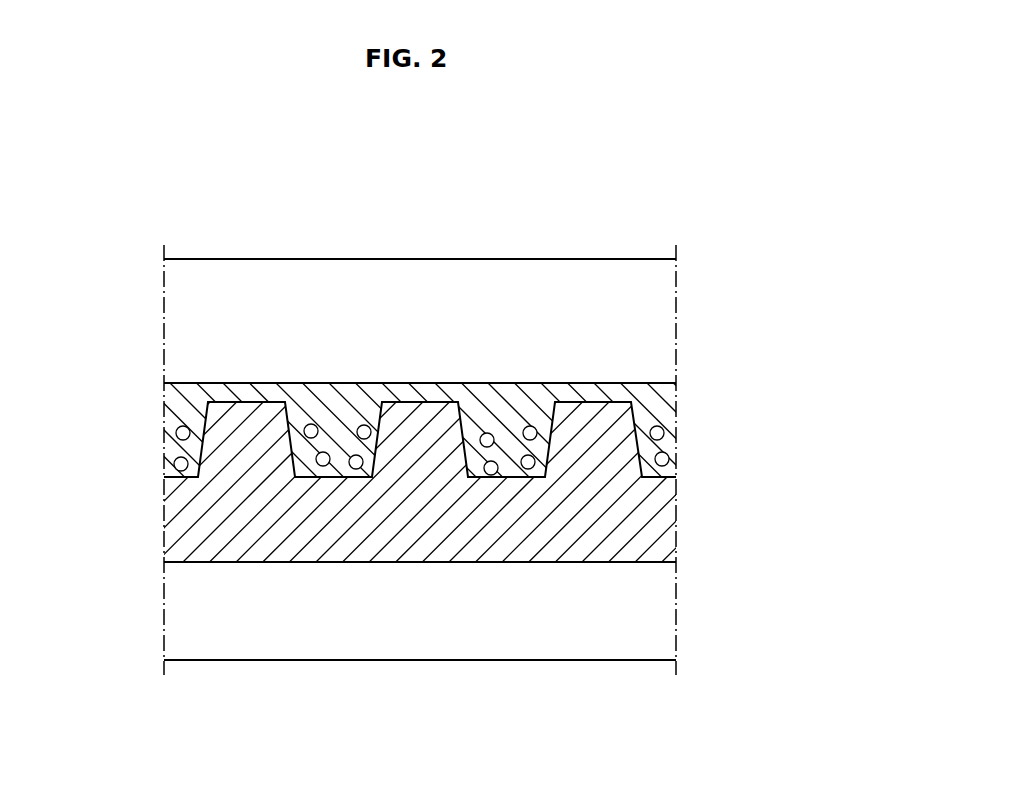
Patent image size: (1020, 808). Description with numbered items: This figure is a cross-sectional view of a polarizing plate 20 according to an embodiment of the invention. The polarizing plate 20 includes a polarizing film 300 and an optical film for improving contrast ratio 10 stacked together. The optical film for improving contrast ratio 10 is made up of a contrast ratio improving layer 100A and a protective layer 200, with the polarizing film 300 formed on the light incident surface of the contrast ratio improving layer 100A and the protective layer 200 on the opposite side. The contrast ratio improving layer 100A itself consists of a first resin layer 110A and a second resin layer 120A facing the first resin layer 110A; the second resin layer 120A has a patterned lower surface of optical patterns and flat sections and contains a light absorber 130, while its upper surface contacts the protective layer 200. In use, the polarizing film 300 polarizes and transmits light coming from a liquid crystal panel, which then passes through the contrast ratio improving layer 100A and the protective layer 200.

The polarizing plate 20 is at (609, 212).
The protective layer 200 is at (663, 299).
The polarizing film 300 is at (663, 615).
The optical film for improving contrast ratio 10 is at (768, 560).
The contrast ratio improving layer 100A is at (687, 382).
The first resin layer 110A is at (175, 520).
The second resin layer 120A is at (168, 433).
The light absorber 130 is at (487, 433).